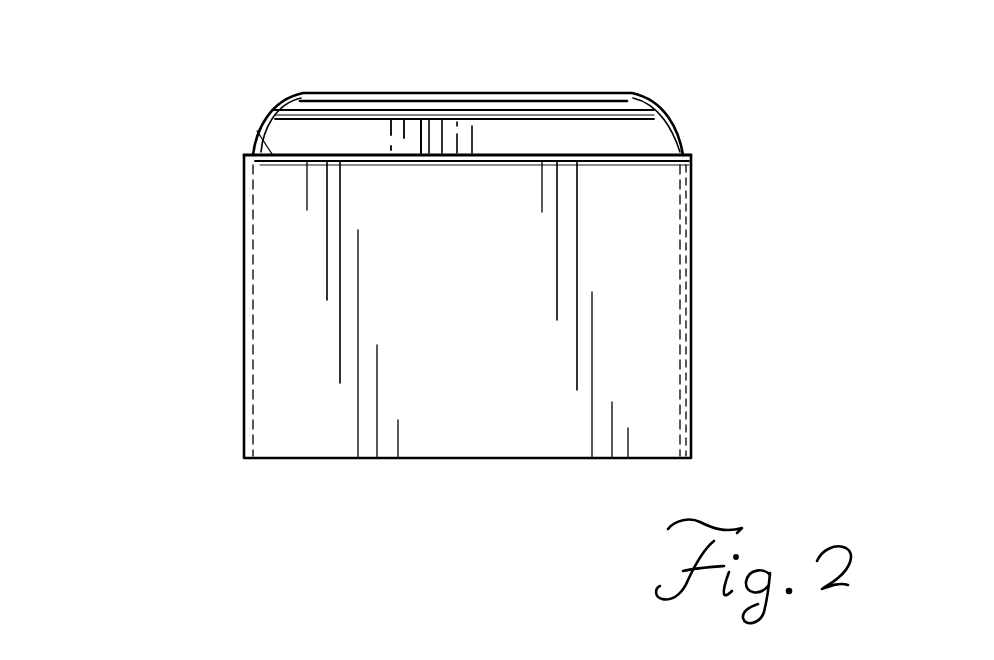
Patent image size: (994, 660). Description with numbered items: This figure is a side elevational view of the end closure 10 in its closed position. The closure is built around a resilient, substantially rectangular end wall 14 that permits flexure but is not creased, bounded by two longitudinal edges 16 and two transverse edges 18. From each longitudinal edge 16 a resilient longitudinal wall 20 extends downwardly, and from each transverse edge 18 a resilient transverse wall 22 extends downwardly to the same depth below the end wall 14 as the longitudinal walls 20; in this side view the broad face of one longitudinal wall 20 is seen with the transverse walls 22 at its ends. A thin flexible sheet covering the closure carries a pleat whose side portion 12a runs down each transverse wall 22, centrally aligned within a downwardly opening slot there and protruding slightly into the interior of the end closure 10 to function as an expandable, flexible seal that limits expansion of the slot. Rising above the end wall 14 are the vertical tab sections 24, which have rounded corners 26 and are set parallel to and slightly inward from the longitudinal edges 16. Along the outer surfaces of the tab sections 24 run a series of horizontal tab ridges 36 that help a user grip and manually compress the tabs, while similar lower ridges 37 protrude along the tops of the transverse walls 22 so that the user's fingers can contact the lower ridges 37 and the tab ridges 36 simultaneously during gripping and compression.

The end closure 10 is at (234, 294).
The side portion of the pleat 12a is at (262, 408).
The end wall 14 is at (666, 153).
The longitudinal edges 16 is at (254, 128).
The transverse edges 18 is at (692, 157).
The longitudinal wall 20 is at (633, 324).
The transverse wall 22 is at (693, 243).
The vertical tab sections 24 is at (345, 142).
The rounded corners 26 is at (259, 128).
The horizontal tab ridges 36 is at (458, 102).
The lower ridges 37 is at (542, 165).